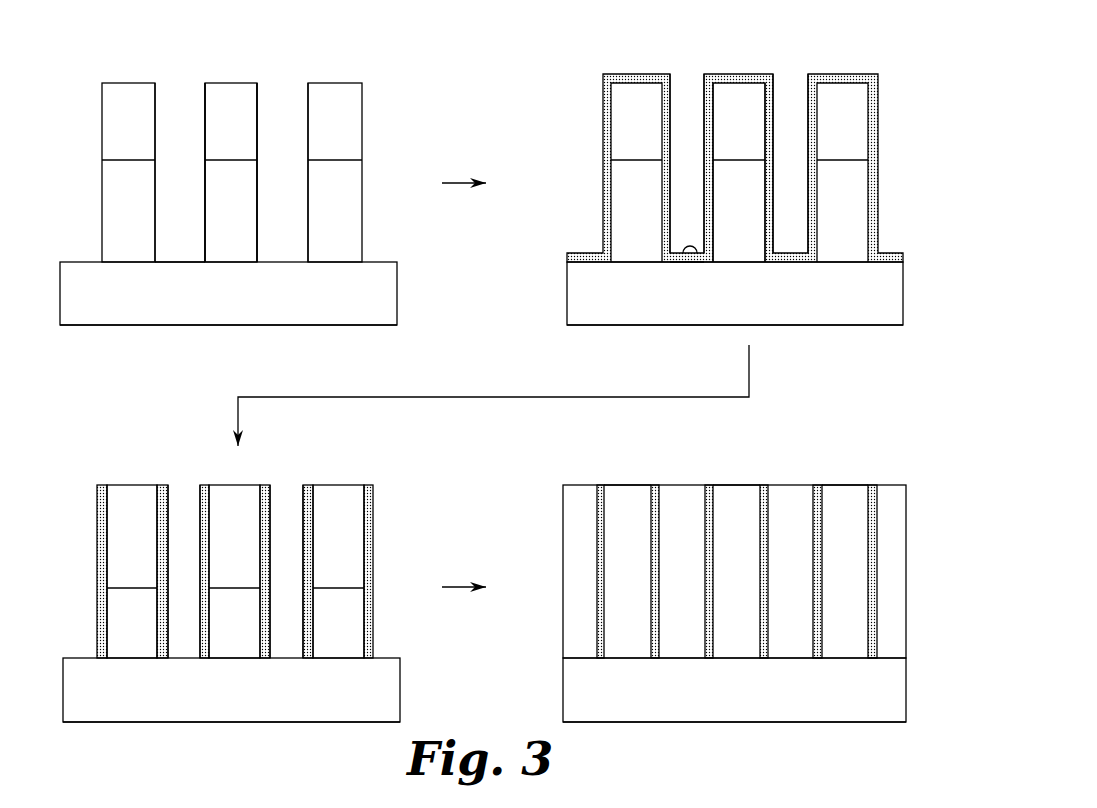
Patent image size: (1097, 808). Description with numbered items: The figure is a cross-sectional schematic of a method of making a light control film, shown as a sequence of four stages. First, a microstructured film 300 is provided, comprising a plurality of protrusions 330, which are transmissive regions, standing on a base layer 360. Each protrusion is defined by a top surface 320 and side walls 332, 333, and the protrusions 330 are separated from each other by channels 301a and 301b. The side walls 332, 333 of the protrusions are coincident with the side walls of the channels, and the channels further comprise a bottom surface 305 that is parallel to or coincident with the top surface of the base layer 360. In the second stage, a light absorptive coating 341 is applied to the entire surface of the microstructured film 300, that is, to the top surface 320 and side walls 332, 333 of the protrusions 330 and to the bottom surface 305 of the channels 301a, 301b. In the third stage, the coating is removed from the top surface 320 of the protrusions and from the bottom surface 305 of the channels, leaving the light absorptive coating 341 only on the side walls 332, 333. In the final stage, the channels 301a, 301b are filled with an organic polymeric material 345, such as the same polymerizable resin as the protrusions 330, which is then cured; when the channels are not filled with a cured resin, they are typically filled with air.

The microstructured film 300 is at (380, 111).
The channel 301a is at (162, 88).
The channel 301b is at (298, 87).
The bottom surface 305 is at (170, 262).
The top surface 320 is at (122, 485).
The protrusions 330 is at (846, 495).
The side wall 332 is at (203, 105).
The side wall 333 is at (258, 100).
The light absorptive coating 341 is at (874, 112).
The organic polymeric material 345 is at (579, 497).
The base layer 360 is at (210, 307).